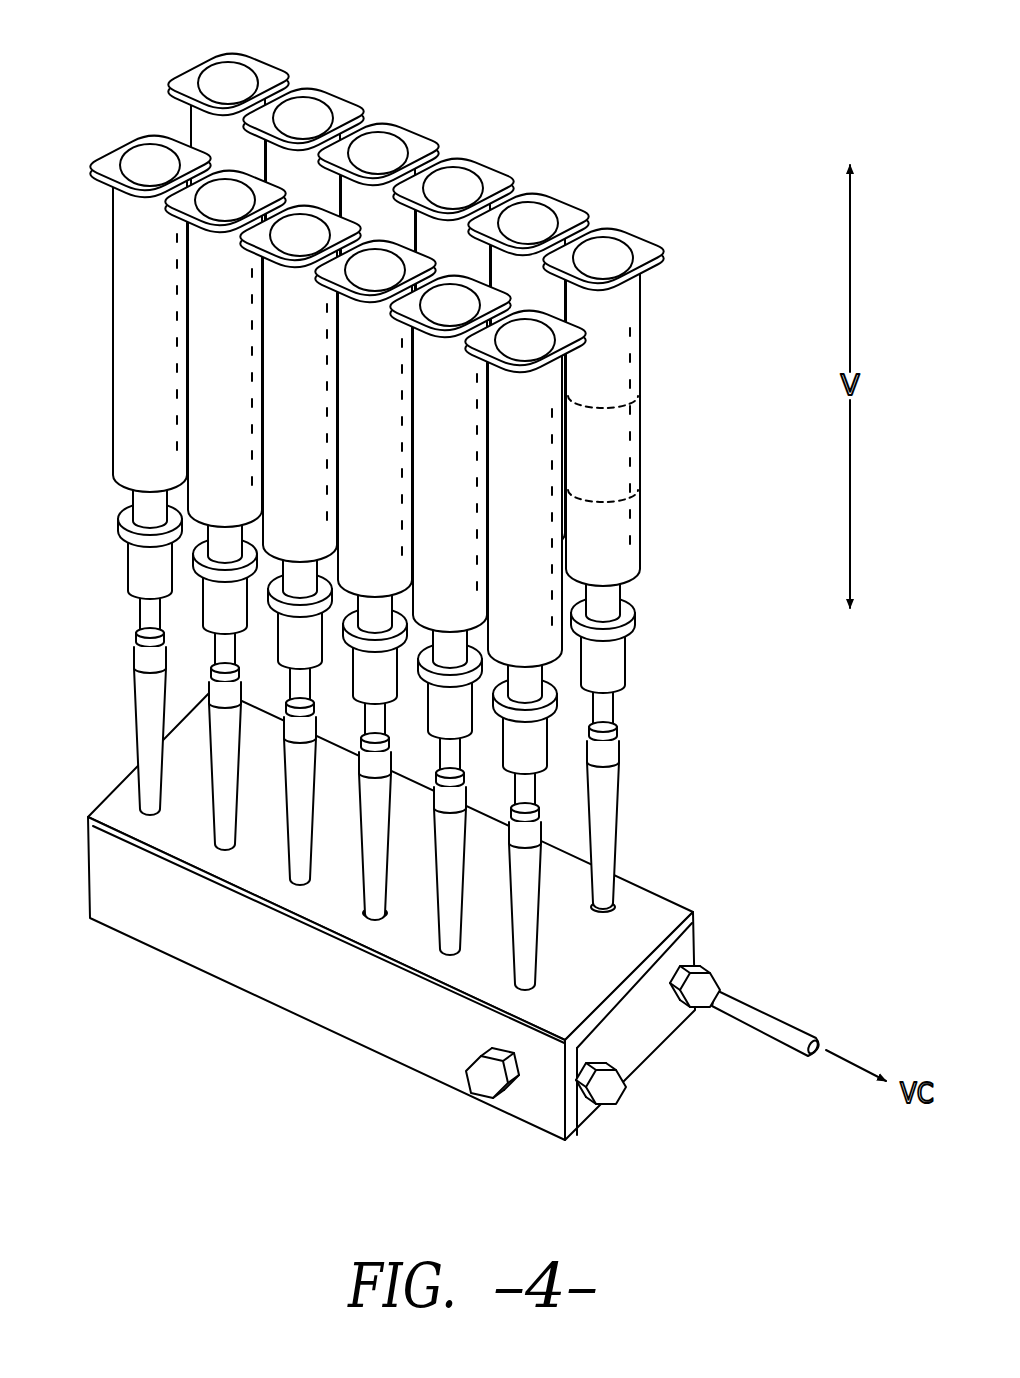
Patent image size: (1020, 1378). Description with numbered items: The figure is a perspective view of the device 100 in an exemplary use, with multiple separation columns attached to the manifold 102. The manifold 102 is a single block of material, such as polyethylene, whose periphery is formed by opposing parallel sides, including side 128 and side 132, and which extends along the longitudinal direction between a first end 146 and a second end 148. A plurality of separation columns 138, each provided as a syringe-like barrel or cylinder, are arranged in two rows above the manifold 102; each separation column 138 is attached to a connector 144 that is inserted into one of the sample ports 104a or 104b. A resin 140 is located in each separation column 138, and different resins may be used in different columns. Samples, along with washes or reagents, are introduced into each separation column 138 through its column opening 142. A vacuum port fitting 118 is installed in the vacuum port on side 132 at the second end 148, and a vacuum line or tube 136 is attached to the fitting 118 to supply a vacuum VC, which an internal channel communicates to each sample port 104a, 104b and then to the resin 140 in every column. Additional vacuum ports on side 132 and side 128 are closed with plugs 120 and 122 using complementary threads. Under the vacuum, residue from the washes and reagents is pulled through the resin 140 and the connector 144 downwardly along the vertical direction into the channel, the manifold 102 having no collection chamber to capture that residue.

The device 100 is at (685, 808).
The manifold 102 is at (640, 912).
The sample ports 104a is at (608, 918).
The sample ports 104b is at (350, 912).
The vacuum port fitting 118 is at (702, 972).
The plug 120 is at (612, 1093).
The plug 122 is at (488, 1080).
The side 128 is at (213, 938).
The side 132 is at (653, 1027).
The vacuum line or tube 136 is at (775, 1017).
The separation columns 138 is at (130, 290).
The resin 140 is at (607, 492).
The column opening 142 is at (226, 76).
The connector 144 is at (148, 712).
The first end 146 is at (86, 921).
The second end 148 is at (566, 1162).